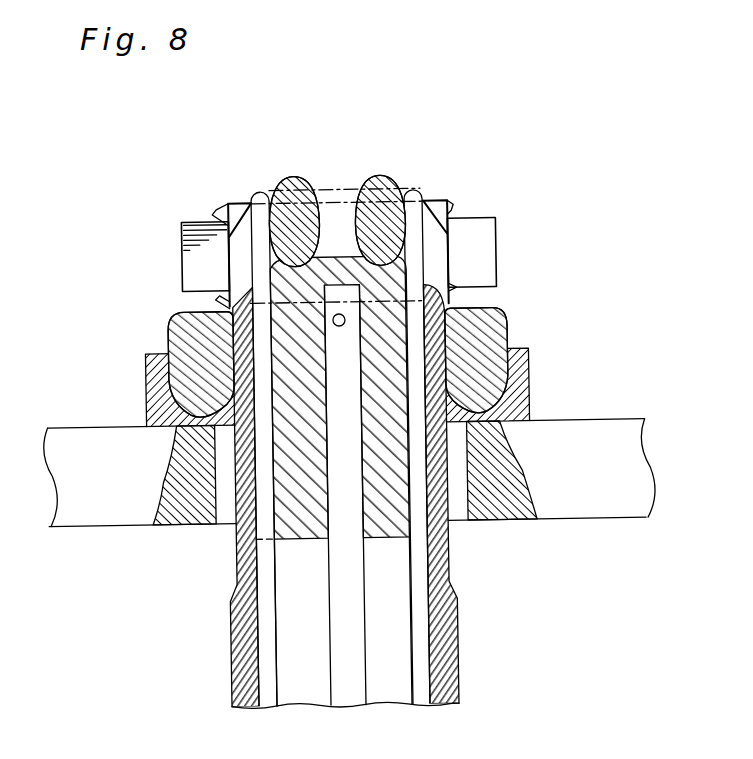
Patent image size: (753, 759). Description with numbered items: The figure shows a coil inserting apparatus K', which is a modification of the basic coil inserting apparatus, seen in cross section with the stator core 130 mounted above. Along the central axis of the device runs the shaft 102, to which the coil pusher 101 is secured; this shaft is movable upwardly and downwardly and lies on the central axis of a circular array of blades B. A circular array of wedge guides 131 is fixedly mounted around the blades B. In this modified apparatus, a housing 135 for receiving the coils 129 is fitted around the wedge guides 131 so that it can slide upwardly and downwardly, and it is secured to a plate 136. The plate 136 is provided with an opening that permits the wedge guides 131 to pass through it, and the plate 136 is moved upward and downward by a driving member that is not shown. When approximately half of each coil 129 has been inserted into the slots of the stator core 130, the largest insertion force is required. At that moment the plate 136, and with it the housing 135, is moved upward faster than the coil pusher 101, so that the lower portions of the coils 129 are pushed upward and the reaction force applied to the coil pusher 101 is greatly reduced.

The coil pusher 101 is at (387, 513).
The shaft 102 is at (341, 602).
The coils 129 is at (497, 331).
The stator core 130 is at (493, 242).
The wedge guides 131 is at (450, 660).
The housing 135 is at (517, 386).
The plate 136 is at (621, 506).
The blades B is at (414, 691).
The coil inserting apparatus K' is at (562, 149).